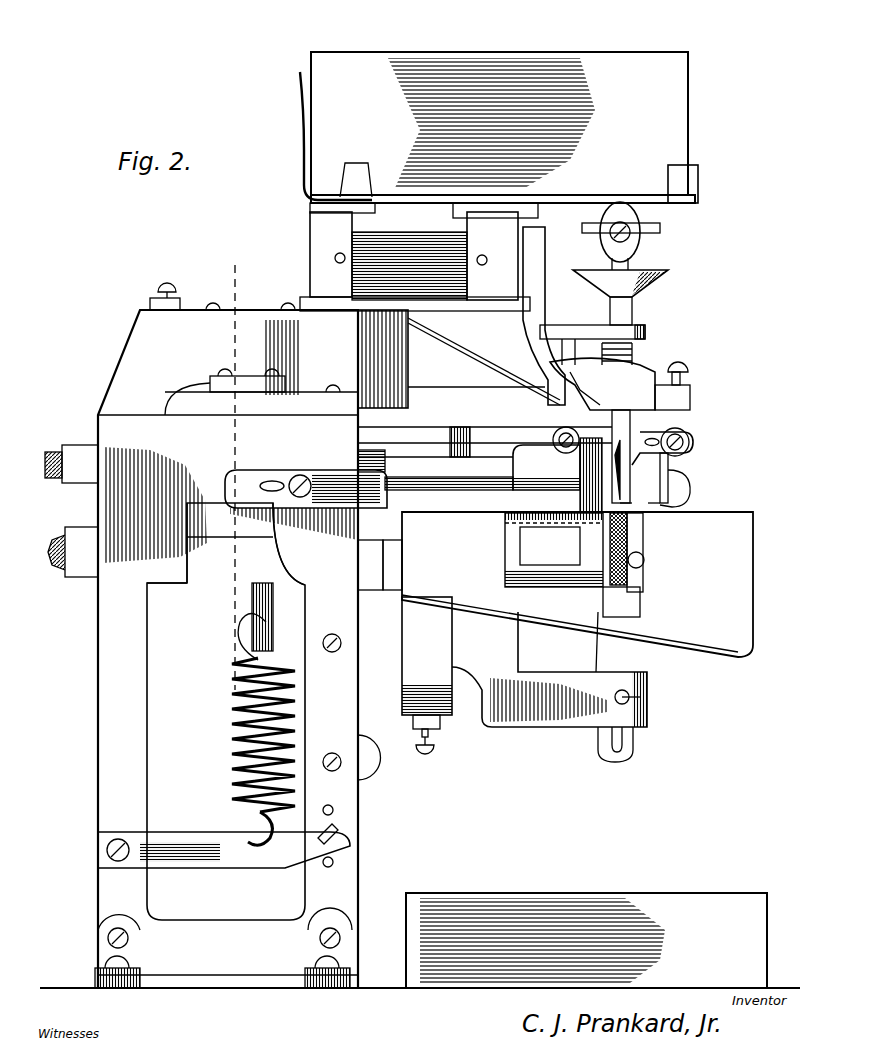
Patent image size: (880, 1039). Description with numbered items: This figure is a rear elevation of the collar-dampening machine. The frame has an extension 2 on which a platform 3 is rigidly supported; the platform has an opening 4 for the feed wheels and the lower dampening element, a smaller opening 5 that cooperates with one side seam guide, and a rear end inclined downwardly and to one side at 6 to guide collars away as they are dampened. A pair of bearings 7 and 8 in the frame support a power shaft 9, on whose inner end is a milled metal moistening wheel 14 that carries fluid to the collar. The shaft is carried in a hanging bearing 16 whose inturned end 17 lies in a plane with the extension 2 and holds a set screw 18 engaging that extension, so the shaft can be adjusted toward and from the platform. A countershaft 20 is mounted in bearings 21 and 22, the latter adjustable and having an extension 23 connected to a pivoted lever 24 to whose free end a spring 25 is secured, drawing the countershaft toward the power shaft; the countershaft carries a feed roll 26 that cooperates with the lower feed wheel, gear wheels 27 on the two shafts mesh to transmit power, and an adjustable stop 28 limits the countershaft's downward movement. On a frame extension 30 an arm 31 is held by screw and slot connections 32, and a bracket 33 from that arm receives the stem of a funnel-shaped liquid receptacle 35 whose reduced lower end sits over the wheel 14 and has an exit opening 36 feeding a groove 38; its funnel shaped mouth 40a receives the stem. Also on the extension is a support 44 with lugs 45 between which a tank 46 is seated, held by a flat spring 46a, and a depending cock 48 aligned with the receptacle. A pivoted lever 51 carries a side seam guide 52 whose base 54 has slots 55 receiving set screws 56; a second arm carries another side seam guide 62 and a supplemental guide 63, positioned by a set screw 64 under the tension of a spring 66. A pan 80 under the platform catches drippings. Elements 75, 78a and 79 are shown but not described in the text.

The extension 2 is at (512, 647).
The platform 3 is at (577, 584).
The opening 4 is at (646, 565).
The smaller opening 5 is at (232, 467).
The inclined rear end 6 is at (718, 652).
The bearing 7 is at (88, 578).
The bearing 8 is at (372, 580).
The power shaft 9 is at (57, 572).
The moistening wheel 14 is at (632, 527).
The hanging bearing 16 is at (427, 656).
The inturned end 17 is at (440, 728).
The set screw 18 is at (421, 748).
The countershaft 20 is at (449, 475).
The bearing 21 is at (95, 447).
The bearing 22 is at (380, 458).
The extension 23 is at (305, 592).
The pivoted lever 24 is at (240, 630).
The spring 25 is at (232, 704).
The feed roll 26 is at (557, 475).
The gear wheels 27 is at (187, 588).
The stop 28 is at (388, 501).
The extension 30 is at (427, 266).
The arm 31 is at (455, 211).
The screw and slot connections 32 is at (343, 254).
The bracket 33 is at (548, 328).
The liquid receptacle 35 is at (634, 320).
The exit opening 36 is at (630, 468).
The groove 38 is at (674, 492).
The funnel shaped mouth 40a is at (666, 277).
The support 44 is at (668, 203).
The lugs 45 is at (700, 192).
The tank 46 is at (499, 123).
The flat spring 46a is at (300, 150).
The cock 48 is at (640, 250).
The lever 51 is at (495, 436).
The side seam guide 52 is at (575, 520).
The base 54 is at (690, 442).
The slots 55 is at (690, 430).
The set screws 56 is at (566, 432).
The side seam guide 62 is at (690, 503).
The supplemental guide 63 is at (655, 506).
The set screw 64 is at (173, 288).
The spring 66 is at (484, 359).
The block 75 is at (578, 546).
The bracket 78a is at (646, 600).
The pin 79 is at (648, 713).
The pan 80 is at (586, 928).